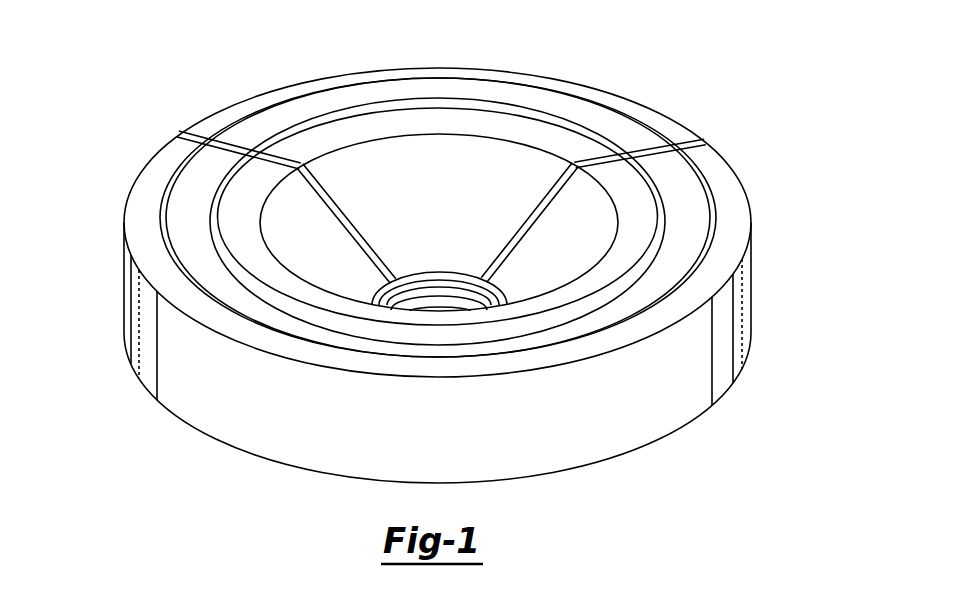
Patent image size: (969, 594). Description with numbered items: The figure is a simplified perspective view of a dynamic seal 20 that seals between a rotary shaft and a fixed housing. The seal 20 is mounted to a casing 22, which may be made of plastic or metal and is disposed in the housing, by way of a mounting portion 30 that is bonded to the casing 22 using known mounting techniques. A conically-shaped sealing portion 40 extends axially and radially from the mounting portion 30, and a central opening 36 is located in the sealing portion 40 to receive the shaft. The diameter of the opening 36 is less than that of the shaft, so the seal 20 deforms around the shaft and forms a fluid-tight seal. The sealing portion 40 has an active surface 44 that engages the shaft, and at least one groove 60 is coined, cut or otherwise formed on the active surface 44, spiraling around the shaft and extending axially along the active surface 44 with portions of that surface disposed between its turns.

The dynamic seal 20 is at (577, 70).
The casing 22 is at (751, 295).
The mounting portion 30 is at (505, 88).
The central opening 36 is at (449, 266).
The conically-shaped sealing portion 40 is at (342, 166).
The active side/surface 44 is at (424, 277).
The groove 60 is at (388, 290).